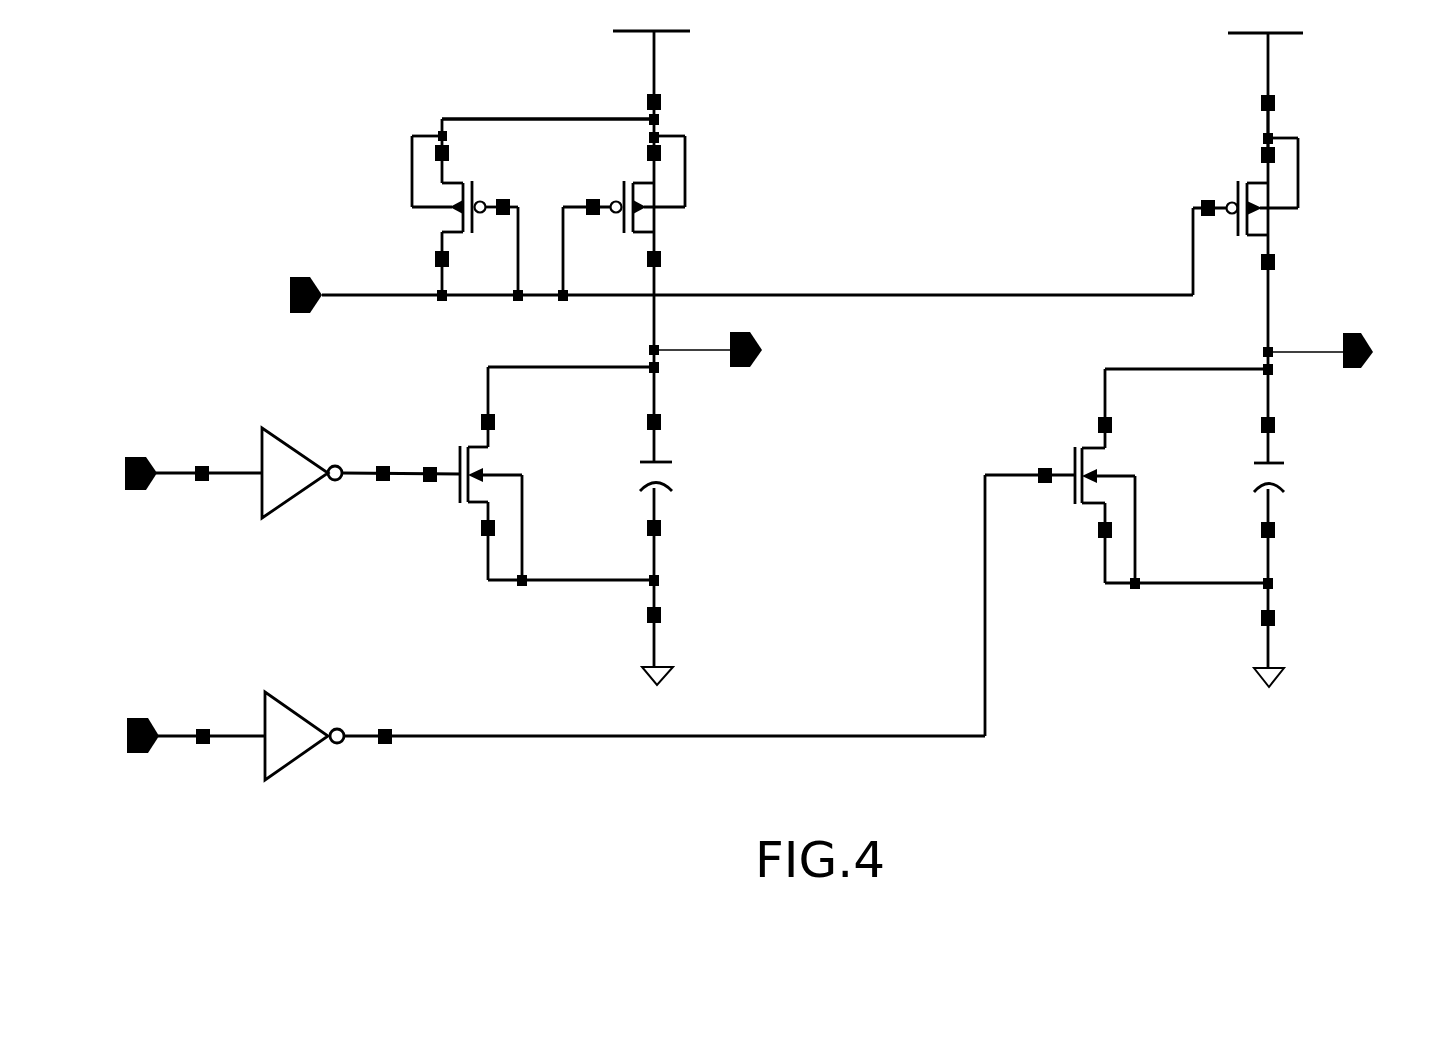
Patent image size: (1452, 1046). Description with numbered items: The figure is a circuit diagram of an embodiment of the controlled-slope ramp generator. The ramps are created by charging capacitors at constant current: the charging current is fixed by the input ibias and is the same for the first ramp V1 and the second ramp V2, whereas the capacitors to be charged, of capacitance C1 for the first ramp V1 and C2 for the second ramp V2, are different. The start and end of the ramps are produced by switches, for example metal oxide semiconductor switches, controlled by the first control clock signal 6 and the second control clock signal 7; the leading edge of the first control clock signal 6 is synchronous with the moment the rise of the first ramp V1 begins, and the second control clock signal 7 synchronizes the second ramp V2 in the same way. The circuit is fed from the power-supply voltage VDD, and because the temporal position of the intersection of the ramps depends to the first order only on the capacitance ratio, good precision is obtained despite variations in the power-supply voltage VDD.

The first control clock signal 6 is at (120, 491).
The second control clock signal 7 is at (125, 746).
The first ramp V1 is at (751, 366).
The second ramp V2 is at (1362, 367).
The input ibias is at (273, 295).
The power-supply voltage VDD is at (468, 118).